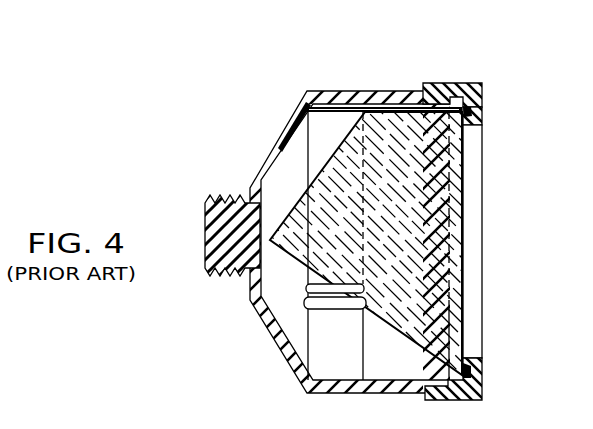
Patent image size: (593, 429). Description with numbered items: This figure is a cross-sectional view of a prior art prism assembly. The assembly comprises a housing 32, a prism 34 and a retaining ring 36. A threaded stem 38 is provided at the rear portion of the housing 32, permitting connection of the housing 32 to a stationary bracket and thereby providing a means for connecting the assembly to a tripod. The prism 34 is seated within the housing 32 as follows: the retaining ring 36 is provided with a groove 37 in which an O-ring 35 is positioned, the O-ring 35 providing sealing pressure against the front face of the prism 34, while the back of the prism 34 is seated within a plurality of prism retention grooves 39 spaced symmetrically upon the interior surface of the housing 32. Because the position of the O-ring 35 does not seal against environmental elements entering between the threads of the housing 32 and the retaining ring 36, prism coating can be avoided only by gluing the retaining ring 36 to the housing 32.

The housing 32 is at (304, 109).
The prism 34 is at (451, 241).
The O-ring 35 is at (471, 122).
The retaining ring 36 is at (466, 83).
The groove 37 is at (470, 113).
The threaded stem 38 is at (204, 208).
The prism retention grooves 39 is at (306, 300).